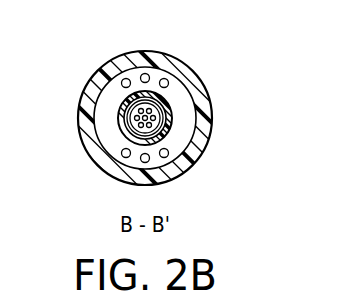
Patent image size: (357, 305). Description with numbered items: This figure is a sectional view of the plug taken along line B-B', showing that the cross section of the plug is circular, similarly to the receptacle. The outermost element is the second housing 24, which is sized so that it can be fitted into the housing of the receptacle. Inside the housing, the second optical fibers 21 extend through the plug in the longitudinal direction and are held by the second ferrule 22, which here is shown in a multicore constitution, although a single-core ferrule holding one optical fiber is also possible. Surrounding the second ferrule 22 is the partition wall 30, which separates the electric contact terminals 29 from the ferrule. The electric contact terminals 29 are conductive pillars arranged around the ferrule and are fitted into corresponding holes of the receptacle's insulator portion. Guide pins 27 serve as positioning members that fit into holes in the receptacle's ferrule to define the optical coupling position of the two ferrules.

The second optical fibers 21 is at (147, 110).
The second ferrule 22 is at (130, 92).
The second housing 24 is at (198, 142).
The guide pins 27 is at (123, 114).
The electric contact terminals 29 is at (166, 82).
The partition wall 30 is at (160, 133).